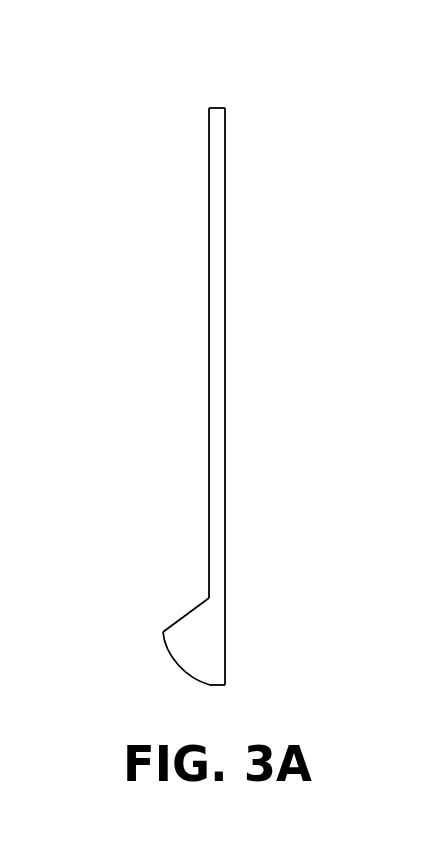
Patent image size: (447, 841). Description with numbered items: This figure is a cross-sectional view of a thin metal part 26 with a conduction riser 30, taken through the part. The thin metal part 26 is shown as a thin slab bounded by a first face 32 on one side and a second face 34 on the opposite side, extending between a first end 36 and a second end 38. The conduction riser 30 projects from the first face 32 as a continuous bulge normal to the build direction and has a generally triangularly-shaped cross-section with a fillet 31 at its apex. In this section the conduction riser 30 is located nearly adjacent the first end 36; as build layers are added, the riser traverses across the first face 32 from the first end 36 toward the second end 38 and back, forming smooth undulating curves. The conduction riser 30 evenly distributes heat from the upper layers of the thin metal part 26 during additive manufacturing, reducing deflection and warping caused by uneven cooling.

The thin metal part 26 is at (196, 361).
The conduction riser 30 is at (195, 632).
The fillet 31 is at (163, 633).
The first face 32 is at (209, 382).
The second face 34 is at (225, 427).
The first end 36 is at (215, 685).
The second end 38 is at (219, 108).